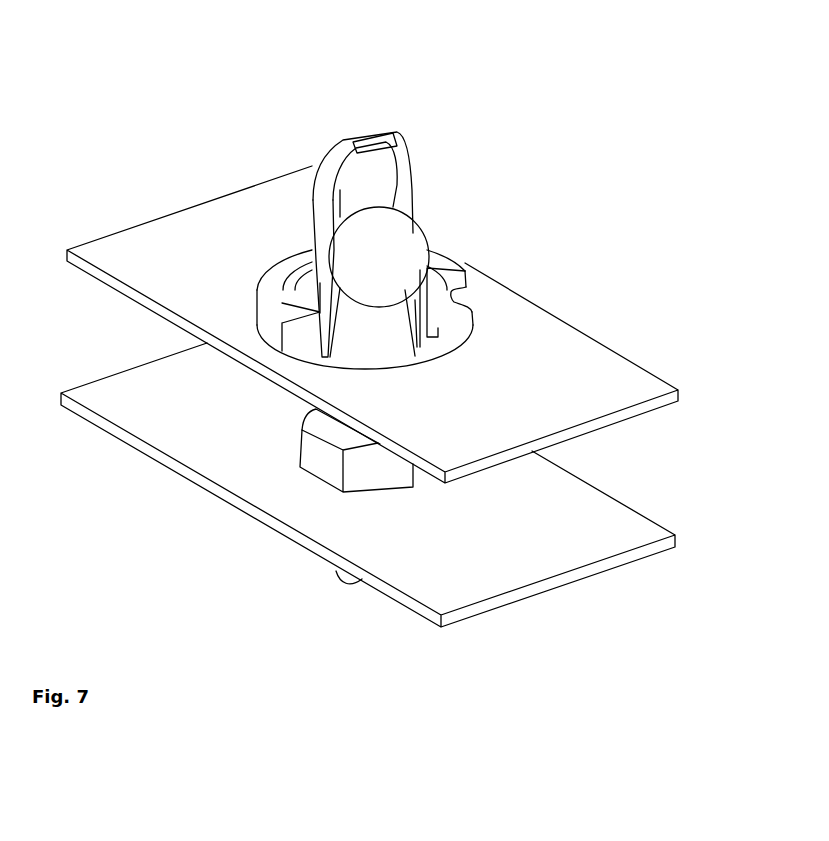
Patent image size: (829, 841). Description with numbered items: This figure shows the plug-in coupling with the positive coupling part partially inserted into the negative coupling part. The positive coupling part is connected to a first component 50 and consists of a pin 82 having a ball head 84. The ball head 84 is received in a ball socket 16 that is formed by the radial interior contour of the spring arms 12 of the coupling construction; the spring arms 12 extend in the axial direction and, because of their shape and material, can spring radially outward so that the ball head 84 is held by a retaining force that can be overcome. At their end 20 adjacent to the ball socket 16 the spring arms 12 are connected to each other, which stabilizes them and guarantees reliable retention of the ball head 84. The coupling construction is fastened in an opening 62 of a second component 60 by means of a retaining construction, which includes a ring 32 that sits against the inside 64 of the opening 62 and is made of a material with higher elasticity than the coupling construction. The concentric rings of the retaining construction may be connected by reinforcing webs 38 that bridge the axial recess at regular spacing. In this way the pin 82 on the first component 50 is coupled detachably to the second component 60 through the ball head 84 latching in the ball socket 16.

The spring arm 12 is at (327, 172).
The ball socket 16 is at (380, 180).
The end 20 is at (366, 136).
The ring 32 is at (276, 291).
The reinforcing web 38 is at (315, 310).
The first component 50 is at (557, 550).
The second component 60 is at (578, 405).
The opening 62 is at (474, 313).
The inside of the opening 64 is at (462, 300).
The pin 82 is at (367, 468).
The ball head 84 is at (400, 243).